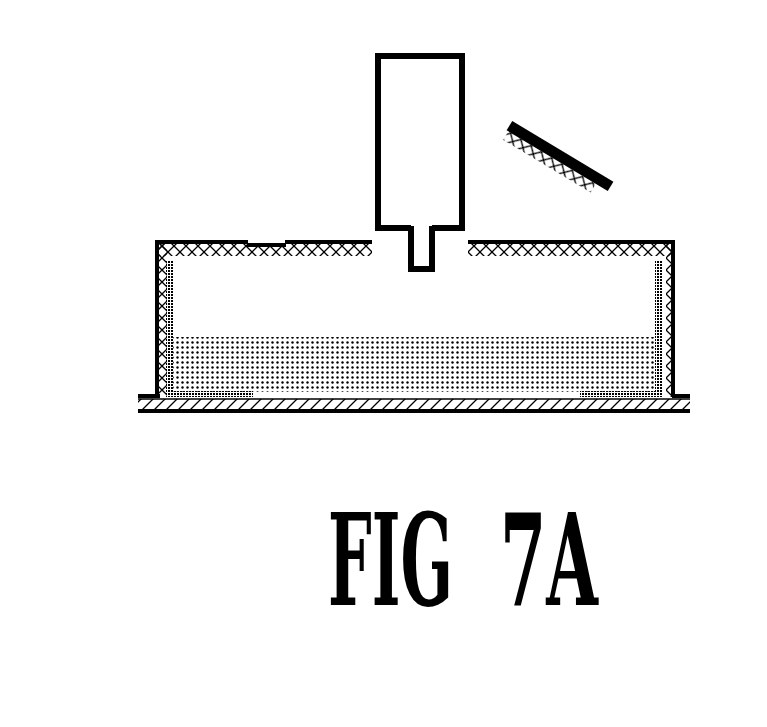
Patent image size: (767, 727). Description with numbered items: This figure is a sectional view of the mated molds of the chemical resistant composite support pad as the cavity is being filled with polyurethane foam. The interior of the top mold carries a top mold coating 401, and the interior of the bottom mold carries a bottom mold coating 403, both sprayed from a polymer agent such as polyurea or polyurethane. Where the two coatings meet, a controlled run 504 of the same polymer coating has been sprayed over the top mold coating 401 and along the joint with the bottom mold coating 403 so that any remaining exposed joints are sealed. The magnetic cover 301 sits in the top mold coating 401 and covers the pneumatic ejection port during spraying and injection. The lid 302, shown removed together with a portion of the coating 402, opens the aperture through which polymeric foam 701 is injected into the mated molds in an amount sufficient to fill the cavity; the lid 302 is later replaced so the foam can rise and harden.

The magnetic cover 301 is at (272, 242).
The lid 302 is at (556, 148).
The top mold coating 401 is at (352, 240).
The portion of the coating 402 is at (582, 172).
The bottom mold coating 403 is at (378, 410).
The controlled run 504 is at (172, 335).
The polymeric foam 701 is at (505, 362).